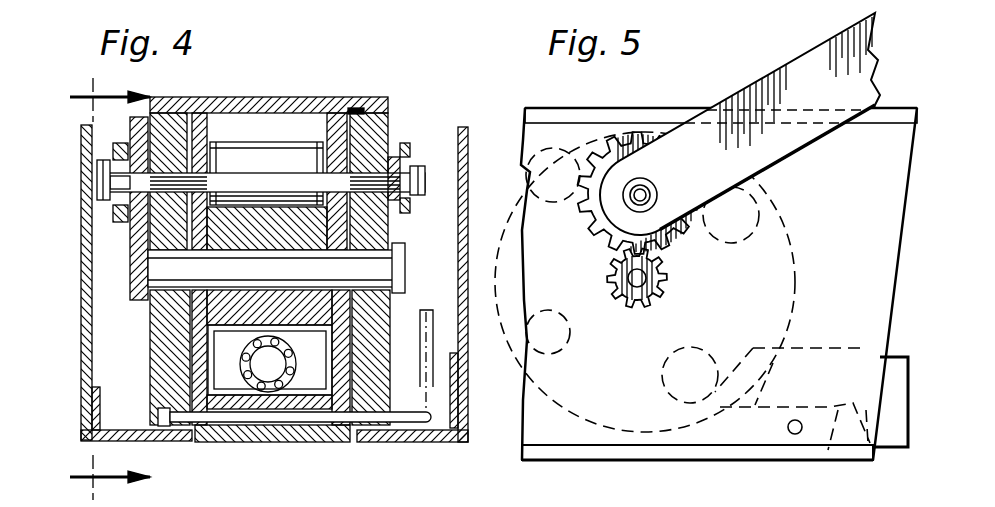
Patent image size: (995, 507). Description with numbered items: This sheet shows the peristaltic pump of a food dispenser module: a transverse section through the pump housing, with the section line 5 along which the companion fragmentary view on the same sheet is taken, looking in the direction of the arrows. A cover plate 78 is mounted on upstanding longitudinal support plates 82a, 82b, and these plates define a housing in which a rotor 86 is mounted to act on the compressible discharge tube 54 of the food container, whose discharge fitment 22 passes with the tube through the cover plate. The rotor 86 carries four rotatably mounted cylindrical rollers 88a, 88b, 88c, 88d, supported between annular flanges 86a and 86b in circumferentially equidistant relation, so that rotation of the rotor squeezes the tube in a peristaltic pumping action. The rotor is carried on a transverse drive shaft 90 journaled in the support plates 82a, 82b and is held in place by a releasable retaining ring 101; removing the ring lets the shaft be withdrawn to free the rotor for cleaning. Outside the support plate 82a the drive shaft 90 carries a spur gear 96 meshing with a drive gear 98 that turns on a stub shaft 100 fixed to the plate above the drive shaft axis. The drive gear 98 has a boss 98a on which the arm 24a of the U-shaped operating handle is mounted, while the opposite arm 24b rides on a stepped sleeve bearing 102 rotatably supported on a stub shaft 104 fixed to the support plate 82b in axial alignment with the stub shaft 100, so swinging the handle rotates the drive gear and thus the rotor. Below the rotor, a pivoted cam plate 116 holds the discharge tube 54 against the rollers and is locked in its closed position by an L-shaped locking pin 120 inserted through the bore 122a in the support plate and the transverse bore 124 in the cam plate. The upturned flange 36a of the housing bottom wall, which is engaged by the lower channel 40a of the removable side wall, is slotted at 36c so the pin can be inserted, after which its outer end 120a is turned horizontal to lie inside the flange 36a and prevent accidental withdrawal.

In FIG. 4, the section line 5— 5 is at (99, 289).
In FIG. 5, the discharge fitment 22 is at (912, 430).
In FIG. 4, the arm 24a is at (113, 148).
In FIG. 5, the arm 24a is at (779, 82).
In FIG. 4, the opposite arm 24b is at (398, 158).
In FIG. 4, the upwardly directed flange 36a is at (440, 432).
In FIG. 4, the slot 36c is at (460, 428).
In FIG. 4, the lower channel 40a is at (460, 356).
In FIG. 4, the compressible discharge tube 54 is at (292, 410).
In FIG. 5, the compressible discharge tube 54 is at (848, 343).
In FIG. 4, the cover plate 78 is at (290, 97).
In FIG. 5, the cover plate 78 is at (590, 80).
In FIG. 4, the longitudinal support plate 82a is at (158, 372).
In FIG. 5, the longitudinal support plate 82a is at (523, 262).
In FIG. 4, the longitudinal support plate 82b is at (370, 113).
In FIG. 4, the rotor 86 is at (380, 112).
In FIG. 5, the rotor 86 is at (797, 298).
In FIG. 4, the annular flange 86a is at (212, 97).
In FIG. 4, the annular flange 86b is at (330, 115).
In FIG. 4, the cylindrical roller 88a is at (283, 128).
In FIG. 5, the cylindrical roller 88a is at (530, 136).
In FIG. 4, the cylindrical roller 88b is at (320, 420).
In FIG. 5, the cylindrical roller 88b is at (580, 340).
In FIG. 5, the cylindrical roller 88c is at (718, 338).
In FIG. 5, the cylindrical roller 88d is at (790, 214).
In FIG. 4, the transverse drive shaft 90 is at (372, 260).
In FIG. 4, the spur gear 96 is at (136, 292).
In FIG. 5, the spur gear 96 is at (608, 284).
In FIG. 4, the drive gear 98 is at (133, 230).
In FIG. 5, the drive gear 98 is at (612, 242).
In FIG. 4, the boss 98a is at (108, 176).
In FIG. 4, the stub shaft 100 is at (100, 202).
In FIG. 5, the stub shaft 100 is at (652, 202).
In FIG. 4, the releasable retaining ring 101 is at (398, 290).
In FIG. 4, the stepped sleeve bearing 102 is at (412, 166).
In FIG. 4, the stub shaft 104 is at (406, 207).
In FIG. 4, the cam plate 116 is at (258, 440).
In FIG. 5, the cam plate 116 is at (783, 403).
In FIG. 4, the L-shaped locking pin 120 is at (420, 425).
In FIG. 4, the outer end 120a is at (450, 320).
In FIG. 4, the bore 122a is at (158, 410).
In FIG. 4, the transverse bore 124 is at (212, 440).